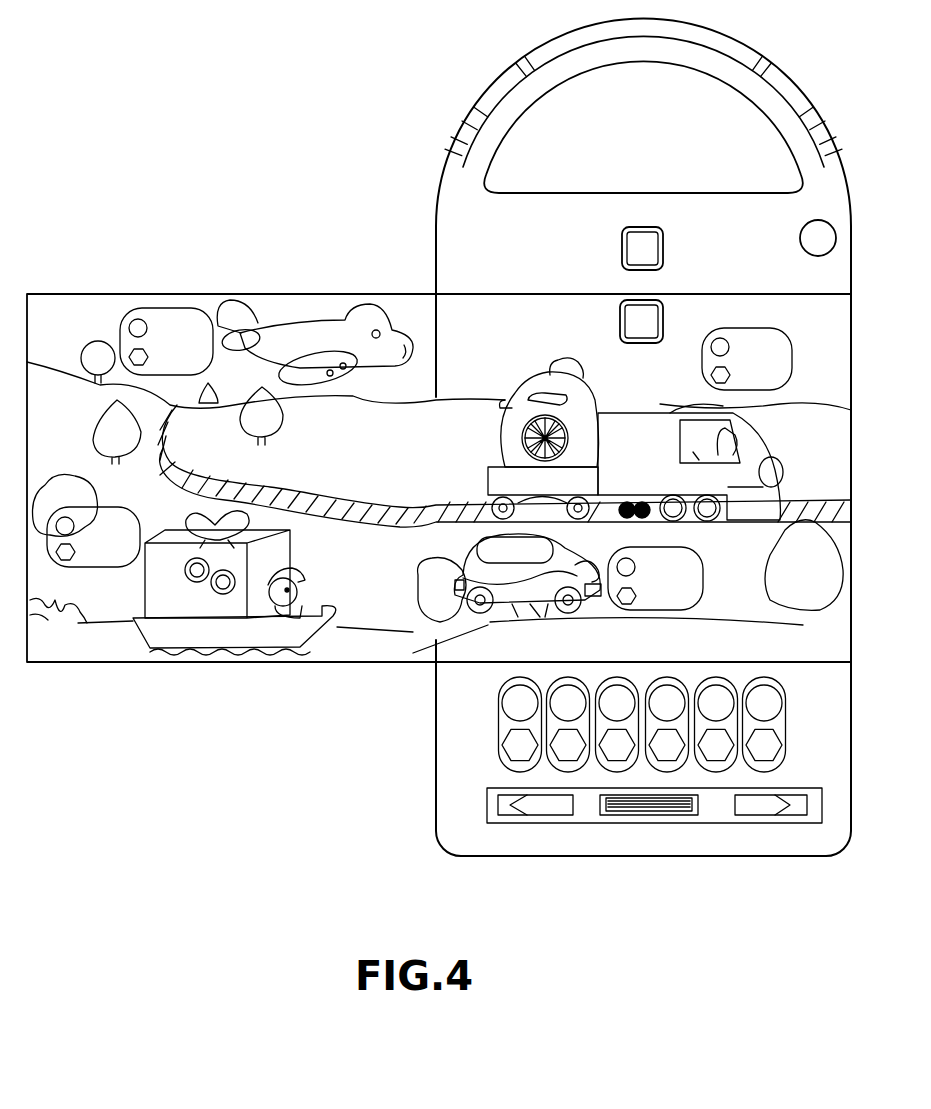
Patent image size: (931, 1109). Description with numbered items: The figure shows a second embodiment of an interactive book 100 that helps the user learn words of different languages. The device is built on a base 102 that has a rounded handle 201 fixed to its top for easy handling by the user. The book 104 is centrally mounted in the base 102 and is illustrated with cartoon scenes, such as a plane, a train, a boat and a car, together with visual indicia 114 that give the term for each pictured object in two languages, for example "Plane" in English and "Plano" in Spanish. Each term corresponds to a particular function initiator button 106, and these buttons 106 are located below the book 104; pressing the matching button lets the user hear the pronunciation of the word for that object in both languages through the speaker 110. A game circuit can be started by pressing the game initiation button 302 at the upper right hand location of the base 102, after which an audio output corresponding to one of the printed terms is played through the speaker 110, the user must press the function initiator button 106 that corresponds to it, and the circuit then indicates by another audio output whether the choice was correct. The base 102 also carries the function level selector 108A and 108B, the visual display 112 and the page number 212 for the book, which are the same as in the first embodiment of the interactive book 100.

The interactive book 100 is at (624, 465).
The base 102 is at (437, 224).
The book 104 is at (292, 293).
The function initiator buttons 106 is at (523, 676).
The function level selector 108A is at (545, 816).
The function level selector 108B is at (750, 816).
The speaker 110 is at (617, 816).
The visual display 112 is at (664, 232).
The visual indicia 114 is at (122, 356).
The rounded handle 201 is at (532, 57).
The page number 212 is at (665, 314).
The game initiation button 302 is at (820, 238).